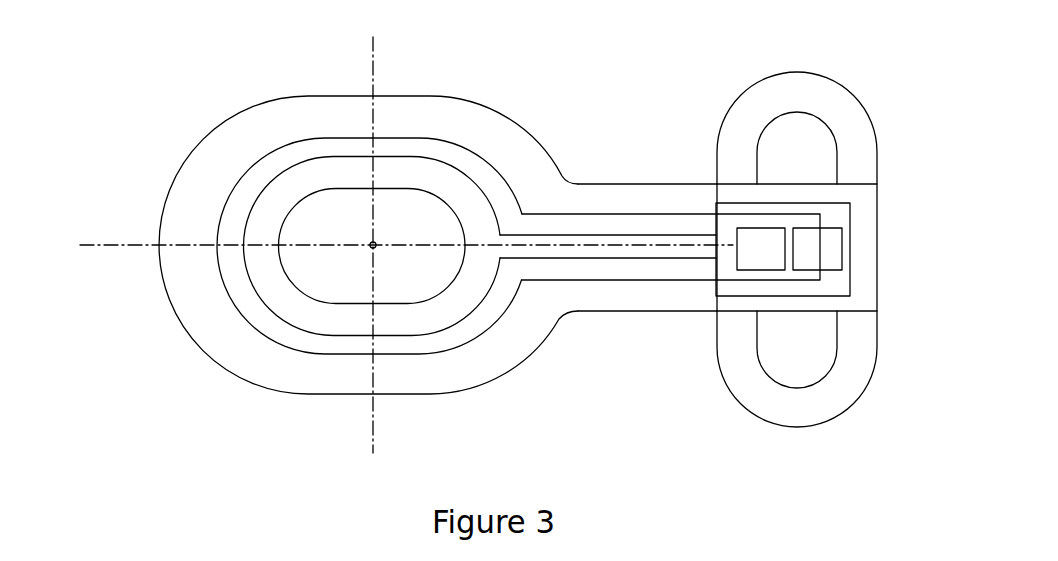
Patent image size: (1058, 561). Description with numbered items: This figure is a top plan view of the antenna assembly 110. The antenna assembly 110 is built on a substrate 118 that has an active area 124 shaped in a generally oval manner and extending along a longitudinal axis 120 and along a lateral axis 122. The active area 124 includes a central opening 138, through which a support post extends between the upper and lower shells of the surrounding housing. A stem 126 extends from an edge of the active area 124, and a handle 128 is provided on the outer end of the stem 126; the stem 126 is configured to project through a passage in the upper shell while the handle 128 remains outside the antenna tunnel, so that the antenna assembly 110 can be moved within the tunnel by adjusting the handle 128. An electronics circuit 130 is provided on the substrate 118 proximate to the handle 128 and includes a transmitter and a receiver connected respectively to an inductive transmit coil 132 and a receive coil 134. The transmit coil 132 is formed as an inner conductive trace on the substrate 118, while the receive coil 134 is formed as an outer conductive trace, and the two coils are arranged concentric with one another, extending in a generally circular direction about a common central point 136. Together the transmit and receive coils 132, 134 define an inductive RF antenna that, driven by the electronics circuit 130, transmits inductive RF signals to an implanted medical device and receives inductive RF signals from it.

The antenna assembly 110 is at (543, 391).
The substrate 118 is at (233, 345).
The longitudinal axis 120 is at (110, 243).
The lateral axis 122 is at (372, 63).
The active area 124 is at (218, 207).
The stem 126 is at (648, 313).
The handle 128 is at (853, 403).
The electronics circuit 130 is at (850, 219).
The transmit coil 132 is at (245, 268).
The receive coil 134 is at (235, 305).
The common central point 136 is at (373, 245).
The central opening 138 is at (407, 187).